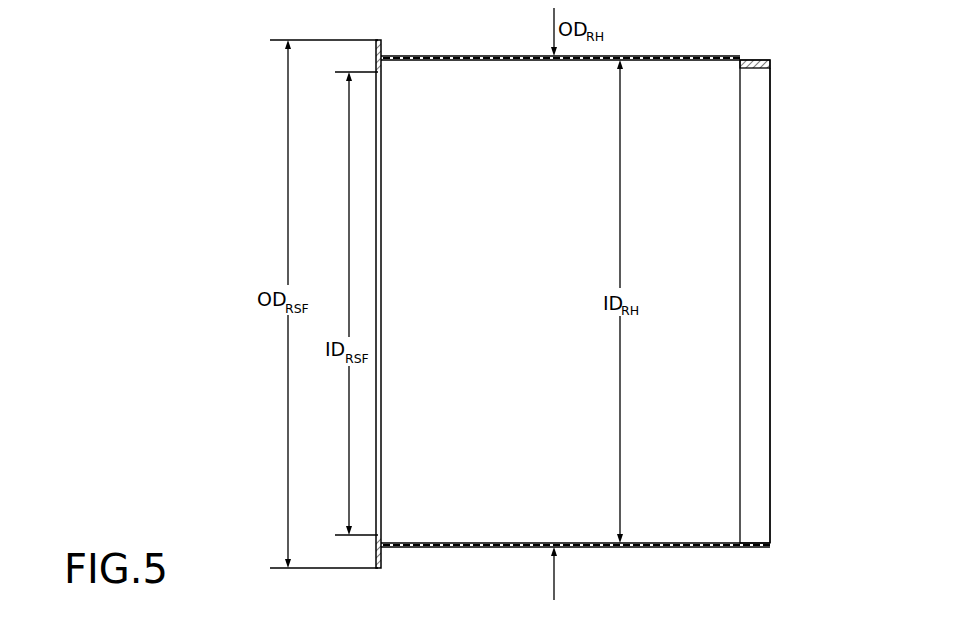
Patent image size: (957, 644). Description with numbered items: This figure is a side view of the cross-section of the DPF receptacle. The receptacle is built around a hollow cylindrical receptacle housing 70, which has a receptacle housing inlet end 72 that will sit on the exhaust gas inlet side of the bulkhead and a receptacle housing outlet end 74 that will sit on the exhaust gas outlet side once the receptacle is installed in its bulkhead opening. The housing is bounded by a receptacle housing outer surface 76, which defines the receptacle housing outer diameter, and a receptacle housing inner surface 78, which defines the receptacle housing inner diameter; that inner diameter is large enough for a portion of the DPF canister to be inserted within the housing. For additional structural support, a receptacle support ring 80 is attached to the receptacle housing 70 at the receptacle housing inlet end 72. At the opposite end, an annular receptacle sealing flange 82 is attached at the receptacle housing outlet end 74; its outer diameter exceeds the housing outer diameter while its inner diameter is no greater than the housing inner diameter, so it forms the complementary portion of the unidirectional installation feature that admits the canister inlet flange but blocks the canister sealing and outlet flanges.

The receptacle housing 70 is at (562, 40).
The receptacle housing outer surface 76 is at (666, 57).
The receptacle housing inlet end 72 is at (752, 61).
The receptacle housing outlet end 74 is at (382, 549).
The receptacle housing inner surface 78 is at (685, 544).
The receptacle support ring 80 is at (752, 311).
The receptacle sealing flange 82 is at (382, 54).